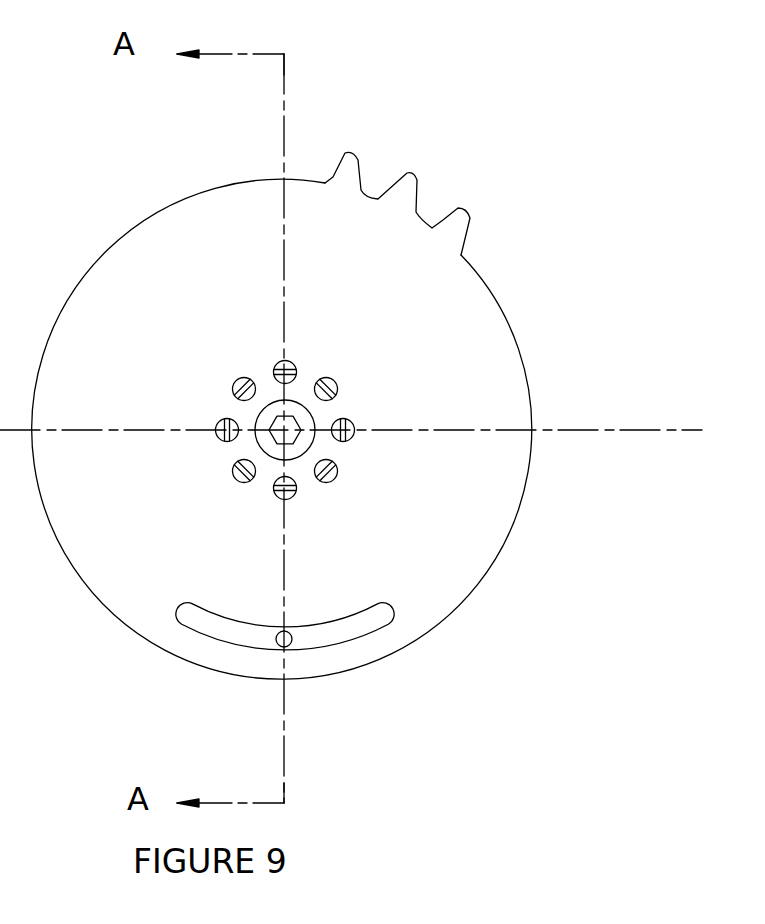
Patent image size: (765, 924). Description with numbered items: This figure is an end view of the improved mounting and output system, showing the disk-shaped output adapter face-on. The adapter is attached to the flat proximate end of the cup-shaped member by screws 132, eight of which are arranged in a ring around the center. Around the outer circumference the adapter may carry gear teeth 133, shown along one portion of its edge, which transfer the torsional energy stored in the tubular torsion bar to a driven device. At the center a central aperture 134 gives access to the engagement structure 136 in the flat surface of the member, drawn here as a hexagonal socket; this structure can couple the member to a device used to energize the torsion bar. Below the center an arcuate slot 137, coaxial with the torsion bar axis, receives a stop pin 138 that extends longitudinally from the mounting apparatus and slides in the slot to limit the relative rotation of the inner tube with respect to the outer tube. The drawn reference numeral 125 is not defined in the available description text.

The disc wheel 125 is at (483, 367).
The screws 132 is at (290, 360).
The gear teeth 133 is at (451, 233).
The central aperture 134 is at (257, 418).
The engagement structure 136 is at (290, 439).
The arcuate slot 137 is at (215, 607).
The stop pin 138 is at (285, 631).